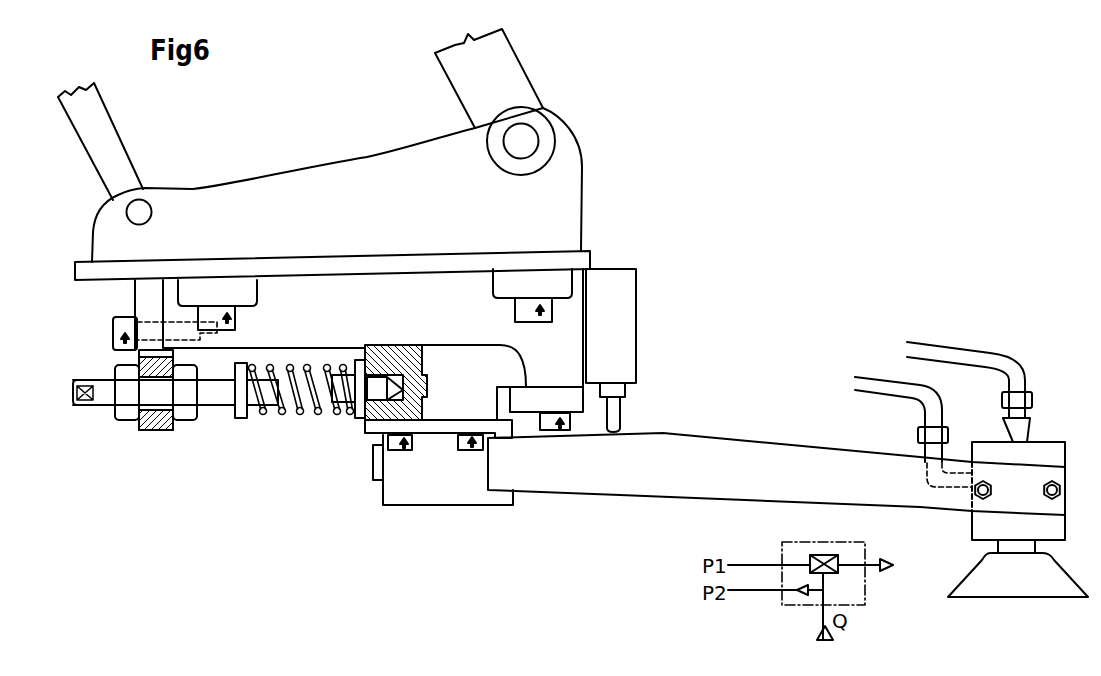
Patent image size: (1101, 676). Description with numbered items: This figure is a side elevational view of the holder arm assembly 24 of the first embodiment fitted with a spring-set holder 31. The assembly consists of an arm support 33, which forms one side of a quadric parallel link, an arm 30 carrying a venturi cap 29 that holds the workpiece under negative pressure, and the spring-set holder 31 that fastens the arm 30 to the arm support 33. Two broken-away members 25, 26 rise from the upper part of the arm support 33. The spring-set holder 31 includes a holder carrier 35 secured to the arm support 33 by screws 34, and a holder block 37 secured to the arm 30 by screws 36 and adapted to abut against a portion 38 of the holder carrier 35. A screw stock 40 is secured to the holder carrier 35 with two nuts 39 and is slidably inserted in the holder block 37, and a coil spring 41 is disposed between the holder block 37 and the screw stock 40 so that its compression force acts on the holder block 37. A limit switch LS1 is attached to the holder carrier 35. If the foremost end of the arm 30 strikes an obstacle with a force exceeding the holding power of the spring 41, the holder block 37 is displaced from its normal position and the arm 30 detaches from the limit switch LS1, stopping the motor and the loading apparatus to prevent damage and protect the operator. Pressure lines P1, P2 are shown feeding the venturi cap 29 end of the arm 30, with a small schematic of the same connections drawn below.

The holder arm assembly 24 is at (583, 180).
The arm 25 is at (93, 144).
The arm 26 is at (510, 68).
The venturi cap 29 is at (1032, 588).
The arm 30 is at (782, 453).
The spring-set holder 31 is at (202, 478).
The arm support 33 is at (311, 180).
The screws 34 is at (187, 290).
The holder carrier 35 is at (387, 280).
The screws 36 is at (403, 450).
The holder block 37 is at (447, 395).
The portion of the holder carrier 38 is at (520, 375).
The nuts 39 is at (128, 417).
The screw stock 40 is at (213, 398).
The coil spring 41 is at (298, 407).
The limit switch LS1 is at (627, 312).
The pressure line P1 is at (898, 427).
The pressure line P2 is at (955, 386).